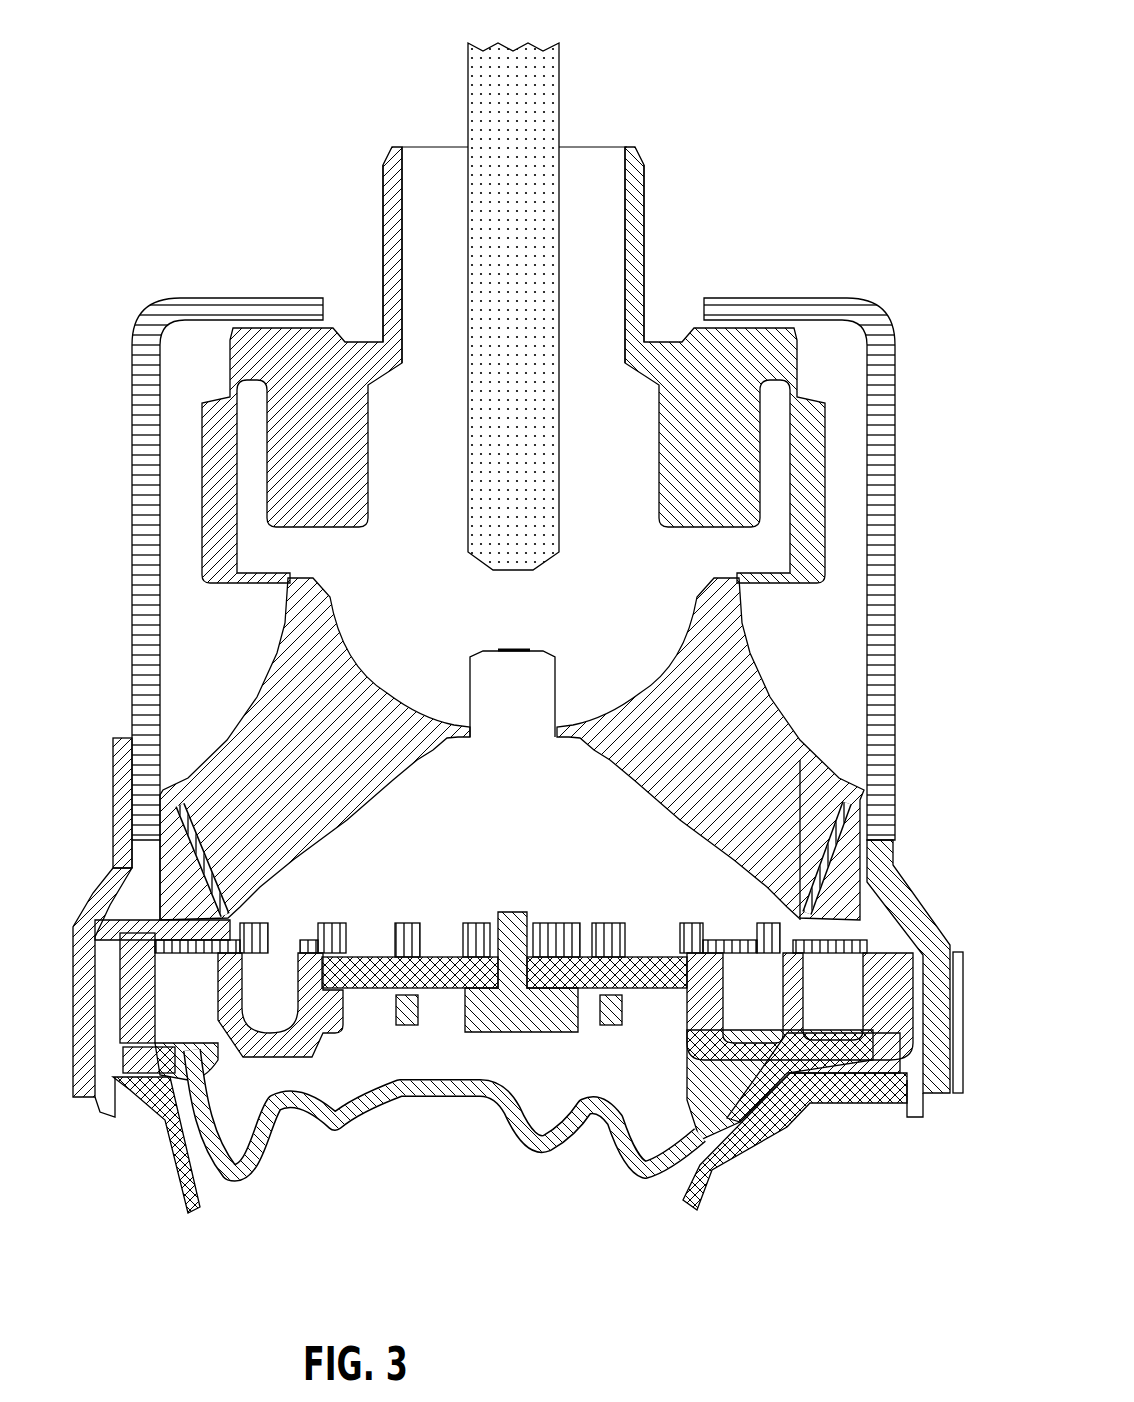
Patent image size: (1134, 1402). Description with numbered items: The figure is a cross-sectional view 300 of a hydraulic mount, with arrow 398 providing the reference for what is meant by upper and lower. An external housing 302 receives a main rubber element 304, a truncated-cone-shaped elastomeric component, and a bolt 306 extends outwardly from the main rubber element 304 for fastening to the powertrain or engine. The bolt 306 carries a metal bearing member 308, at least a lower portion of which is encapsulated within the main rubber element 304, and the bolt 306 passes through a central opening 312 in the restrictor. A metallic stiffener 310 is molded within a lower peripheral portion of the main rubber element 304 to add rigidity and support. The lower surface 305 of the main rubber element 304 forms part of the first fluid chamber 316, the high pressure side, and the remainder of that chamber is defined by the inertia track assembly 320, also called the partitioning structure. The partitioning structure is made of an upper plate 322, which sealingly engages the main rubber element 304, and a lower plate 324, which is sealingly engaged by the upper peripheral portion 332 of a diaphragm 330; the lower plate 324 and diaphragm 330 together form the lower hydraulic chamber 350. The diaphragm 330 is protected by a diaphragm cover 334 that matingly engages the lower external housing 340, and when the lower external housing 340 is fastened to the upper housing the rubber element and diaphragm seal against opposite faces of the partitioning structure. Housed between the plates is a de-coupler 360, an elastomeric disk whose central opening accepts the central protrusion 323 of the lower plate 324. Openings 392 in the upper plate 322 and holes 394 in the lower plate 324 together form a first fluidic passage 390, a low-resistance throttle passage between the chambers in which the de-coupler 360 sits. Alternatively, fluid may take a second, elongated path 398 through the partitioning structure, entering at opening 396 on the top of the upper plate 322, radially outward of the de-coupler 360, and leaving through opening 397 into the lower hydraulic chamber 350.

The cross-sectional view 300 is at (737, 42).
The external housing 302 is at (140, 318).
The main rubber element 304 is at (710, 387).
The lower surface of the main rubber element 305 is at (368, 786).
The bolt 306 is at (512, 190).
The metal bearing member 308 is at (580, 190).
The metallic stiffener 310 is at (794, 822).
The central opening 312 is at (352, 298).
The first fluid chamber 316 is at (533, 805).
The inertia track assembly 320 is at (331, 1033).
The upper plate 322 is at (696, 922).
The central protrusion 323 is at (508, 912).
The lower plate 324 is at (305, 1045).
The diaphragm 330 is at (636, 1148).
The upper peripheral portion of the diaphragm 332 is at (153, 1062).
The diaphragm cover 334 is at (712, 1175).
The lower external housing 340 is at (123, 770).
The lower hydraulic chamber 350 is at (525, 1076).
The de-coupler 360 is at (648, 976).
The first fluidic passage 390 is at (383, 952).
The openings 392 is at (453, 908).
The holes 394 is at (445, 1033).
The opening 396 is at (282, 948).
The opening 397 is at (206, 1033).
The arrow / second path 398 is at (803, 273).